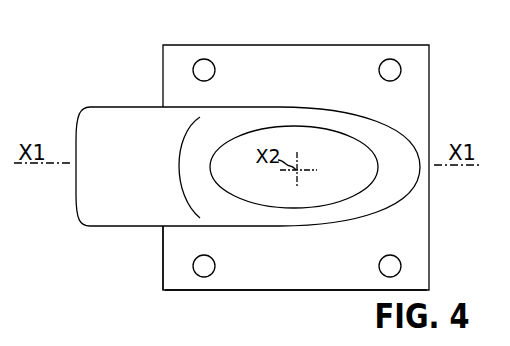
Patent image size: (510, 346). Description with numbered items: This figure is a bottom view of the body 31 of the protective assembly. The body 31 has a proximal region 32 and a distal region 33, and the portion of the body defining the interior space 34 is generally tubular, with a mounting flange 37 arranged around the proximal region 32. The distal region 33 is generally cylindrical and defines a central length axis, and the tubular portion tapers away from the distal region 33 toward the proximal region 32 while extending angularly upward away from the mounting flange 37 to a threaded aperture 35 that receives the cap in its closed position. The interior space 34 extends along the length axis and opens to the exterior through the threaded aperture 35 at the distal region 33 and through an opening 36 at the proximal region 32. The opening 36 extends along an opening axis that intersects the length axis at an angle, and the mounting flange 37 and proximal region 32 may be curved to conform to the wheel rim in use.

The body 31 is at (272, 288).
The proximal region 32 is at (207, 307).
The distal region 33 is at (67, 213).
The interior space 34 is at (270, 202).
The threaded aperture 35 is at (80, 128).
The opening 36 is at (322, 127).
The mounting flange 37 is at (291, 50).